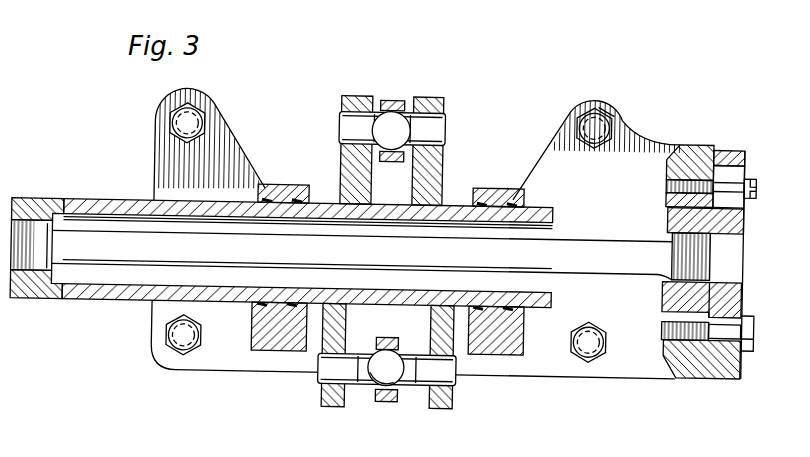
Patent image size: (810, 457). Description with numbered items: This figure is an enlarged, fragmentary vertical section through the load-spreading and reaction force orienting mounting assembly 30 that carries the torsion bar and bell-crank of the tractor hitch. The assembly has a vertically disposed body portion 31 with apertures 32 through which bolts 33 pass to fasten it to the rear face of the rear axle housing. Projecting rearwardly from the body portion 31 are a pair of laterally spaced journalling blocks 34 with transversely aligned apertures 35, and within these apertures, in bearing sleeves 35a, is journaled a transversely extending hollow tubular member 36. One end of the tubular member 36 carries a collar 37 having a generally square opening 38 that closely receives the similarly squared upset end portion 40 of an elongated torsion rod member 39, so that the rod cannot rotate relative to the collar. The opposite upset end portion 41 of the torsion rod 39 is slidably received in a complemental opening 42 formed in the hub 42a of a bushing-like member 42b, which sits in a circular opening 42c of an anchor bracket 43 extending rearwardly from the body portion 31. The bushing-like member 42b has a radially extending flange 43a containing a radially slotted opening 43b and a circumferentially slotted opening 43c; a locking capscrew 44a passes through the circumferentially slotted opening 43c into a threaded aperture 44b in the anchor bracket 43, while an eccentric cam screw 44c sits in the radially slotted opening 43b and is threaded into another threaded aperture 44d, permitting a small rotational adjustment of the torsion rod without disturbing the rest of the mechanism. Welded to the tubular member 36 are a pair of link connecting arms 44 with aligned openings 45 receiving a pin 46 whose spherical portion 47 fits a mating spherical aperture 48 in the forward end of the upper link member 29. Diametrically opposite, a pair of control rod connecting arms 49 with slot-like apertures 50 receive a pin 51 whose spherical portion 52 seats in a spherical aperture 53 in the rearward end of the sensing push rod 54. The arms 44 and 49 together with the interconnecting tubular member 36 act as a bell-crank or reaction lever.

The upper link member 29 is at (387, 403).
The mounting assembly 30 is at (543, 112).
The body portion 31 is at (628, 123).
The apertures 32 is at (608, 94).
The bolts 33 is at (600, 100).
The journalling blocks 34 is at (272, 342).
The apertures 35 is at (254, 306).
The bearing sleeves 35a is at (284, 183).
The hollow tubular member 36 is at (114, 300).
The collar 37 is at (31, 199).
The opening 38 is at (35, 300).
The torsion rod member 39 is at (102, 255).
The upset end portion 40 is at (42, 232).
The upset end portion 41 is at (680, 255).
The complemental opening 42 is at (733, 226).
The hub 42a is at (685, 290).
The bushing-like member 42b is at (747, 128).
The circular opening 42c is at (660, 205).
The anchor bracket 43 is at (690, 145).
The flange 43a is at (727, 362).
The radially slotted opening 43b is at (723, 150).
The circumferentially slotted opening 43c is at (733, 297).
The link connecting arms 44 is at (337, 400).
The locking capscrew 44a is at (753, 348).
The threaded aperture 44b is at (664, 326).
The eccentric cam screw 44c is at (735, 176).
The threaded aperture 44d is at (668, 180).
The openings 45 is at (322, 381).
The pin 46 is at (425, 382).
The spherical portion 47 is at (377, 380).
The spherical aperture 48 is at (395, 398).
The control rod connecting arms 49 is at (350, 95).
The apertures 50 is at (338, 119).
The pin 51 is at (445, 128).
The spherical portion 52 is at (385, 116).
The spherical aperture 53 is at (398, 100).
The push rod 54 is at (395, 158).